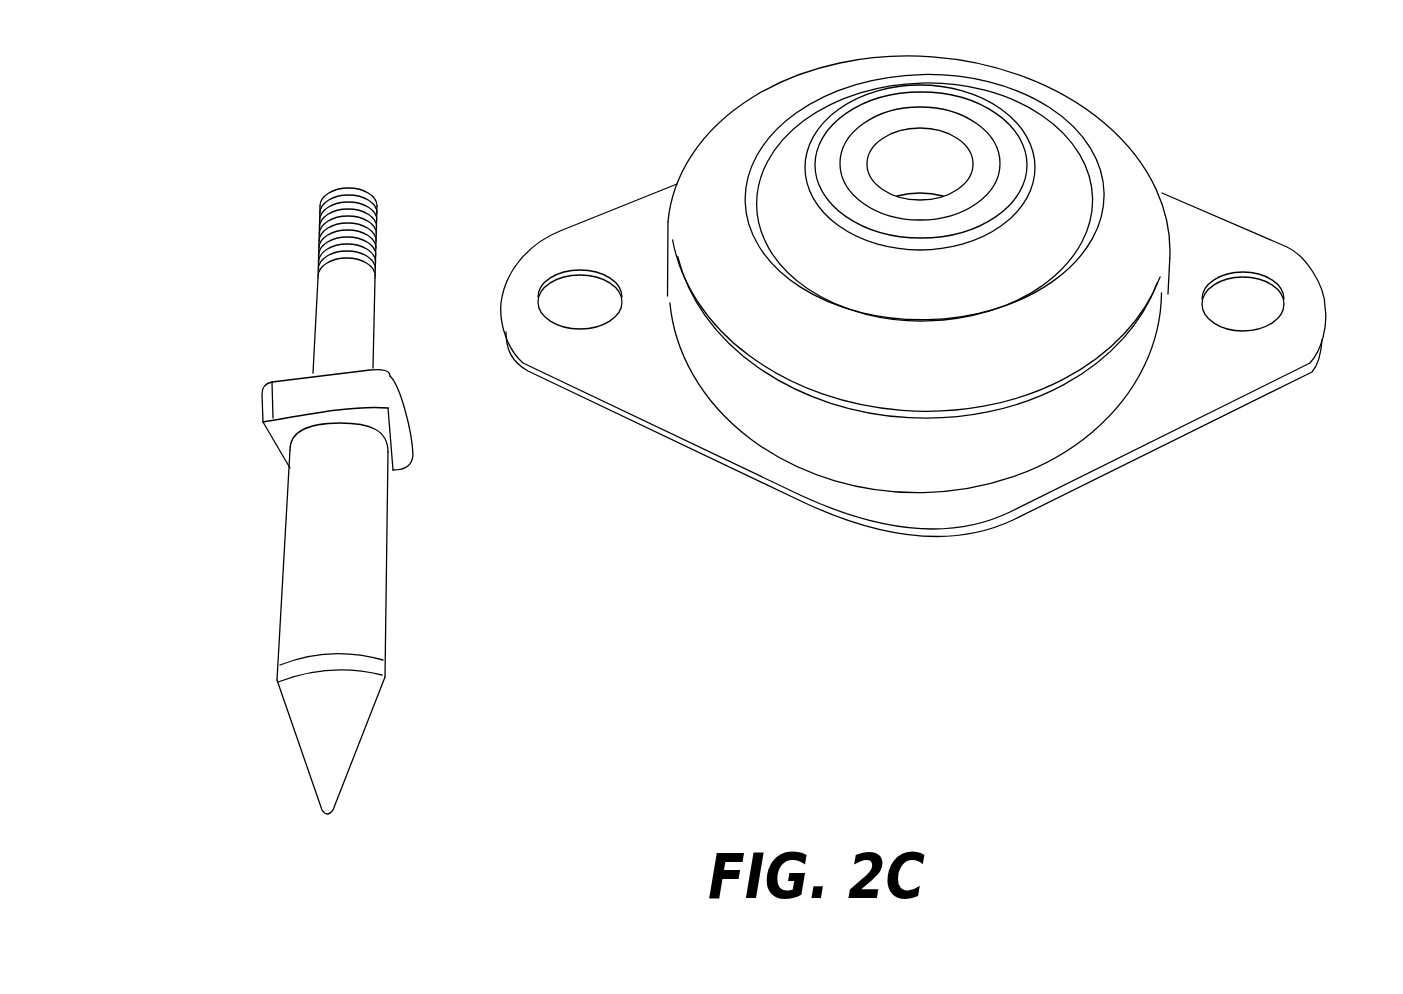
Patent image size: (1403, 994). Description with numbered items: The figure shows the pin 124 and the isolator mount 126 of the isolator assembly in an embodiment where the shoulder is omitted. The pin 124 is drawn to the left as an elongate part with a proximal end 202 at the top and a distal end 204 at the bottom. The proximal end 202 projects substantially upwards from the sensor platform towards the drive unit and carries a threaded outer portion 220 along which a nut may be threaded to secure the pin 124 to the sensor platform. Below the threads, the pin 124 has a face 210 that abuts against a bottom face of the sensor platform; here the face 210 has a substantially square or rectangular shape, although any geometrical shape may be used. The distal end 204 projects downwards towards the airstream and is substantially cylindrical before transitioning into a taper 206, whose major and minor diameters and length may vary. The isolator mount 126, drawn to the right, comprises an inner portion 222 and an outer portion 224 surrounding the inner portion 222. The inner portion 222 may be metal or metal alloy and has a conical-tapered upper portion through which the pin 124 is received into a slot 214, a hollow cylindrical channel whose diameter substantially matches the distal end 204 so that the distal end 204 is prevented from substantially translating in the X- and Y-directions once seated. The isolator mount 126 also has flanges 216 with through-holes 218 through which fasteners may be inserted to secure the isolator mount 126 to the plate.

The pin 124 is at (317, 846).
The isolator mount 126 is at (1007, 605).
The proximal end 202 is at (234, 322).
The distal end 204 is at (204, 572).
The taper 206 is at (348, 729).
The face 210 is at (385, 380).
The slot 214 is at (936, 142).
The flanges 216 is at (578, 395).
The through-holes 218 is at (588, 287).
The threaded outer portion 220 is at (348, 250).
The inner portion 222 is at (877, 118).
The outer portion 224 is at (1083, 115).